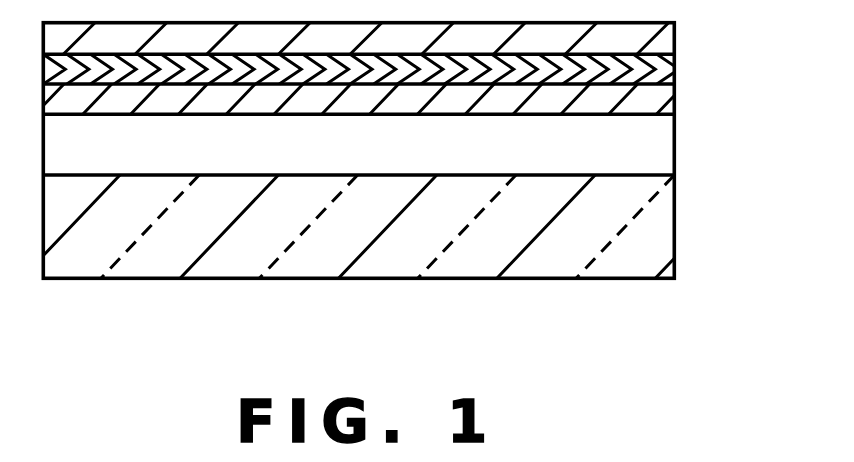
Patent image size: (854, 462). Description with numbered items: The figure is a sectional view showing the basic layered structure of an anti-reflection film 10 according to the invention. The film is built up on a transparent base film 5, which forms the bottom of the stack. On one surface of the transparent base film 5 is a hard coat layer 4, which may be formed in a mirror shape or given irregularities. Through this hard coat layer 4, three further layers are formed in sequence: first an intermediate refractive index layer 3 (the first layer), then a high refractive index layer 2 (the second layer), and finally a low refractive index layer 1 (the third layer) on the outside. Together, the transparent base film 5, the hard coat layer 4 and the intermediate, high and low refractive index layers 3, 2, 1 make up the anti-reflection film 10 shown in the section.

The low refractive index layer 1 is at (665, 35).
The high refractive index layer 2 is at (665, 65).
The intermediate refractive index layer 3 is at (653, 97).
The hard coat layer 4 is at (660, 143).
The transparent base film 5 is at (660, 220).
The anti-reflection film 10 is at (597, 294).